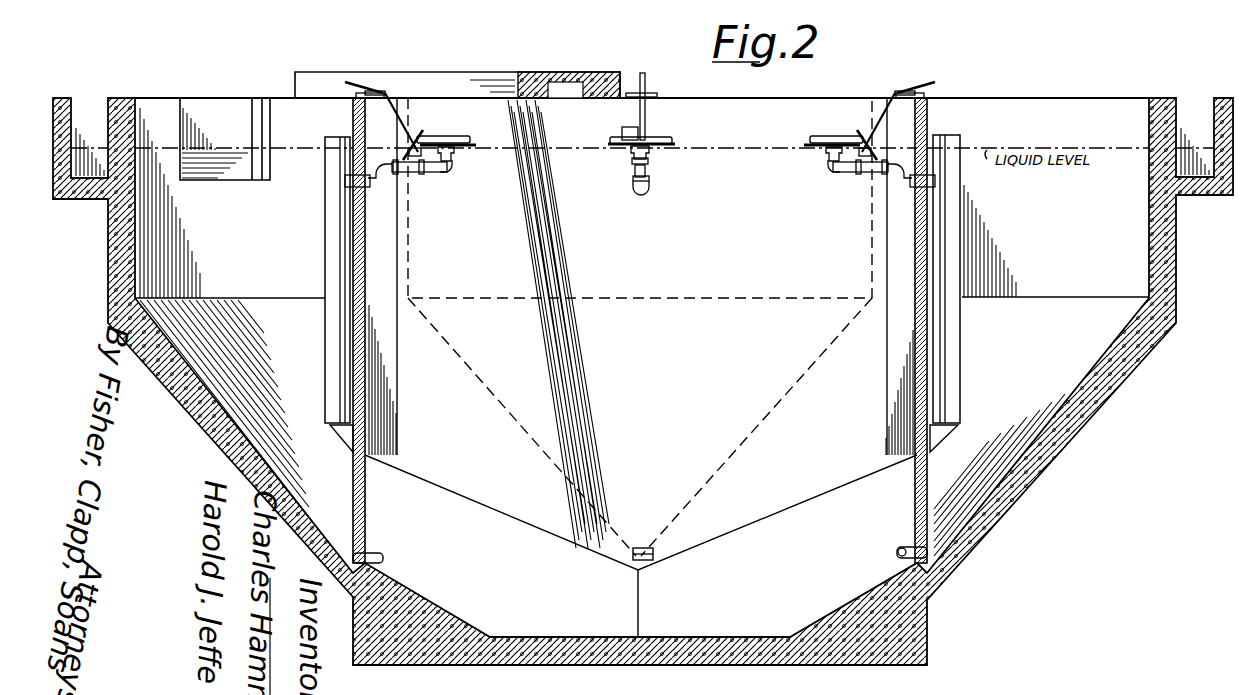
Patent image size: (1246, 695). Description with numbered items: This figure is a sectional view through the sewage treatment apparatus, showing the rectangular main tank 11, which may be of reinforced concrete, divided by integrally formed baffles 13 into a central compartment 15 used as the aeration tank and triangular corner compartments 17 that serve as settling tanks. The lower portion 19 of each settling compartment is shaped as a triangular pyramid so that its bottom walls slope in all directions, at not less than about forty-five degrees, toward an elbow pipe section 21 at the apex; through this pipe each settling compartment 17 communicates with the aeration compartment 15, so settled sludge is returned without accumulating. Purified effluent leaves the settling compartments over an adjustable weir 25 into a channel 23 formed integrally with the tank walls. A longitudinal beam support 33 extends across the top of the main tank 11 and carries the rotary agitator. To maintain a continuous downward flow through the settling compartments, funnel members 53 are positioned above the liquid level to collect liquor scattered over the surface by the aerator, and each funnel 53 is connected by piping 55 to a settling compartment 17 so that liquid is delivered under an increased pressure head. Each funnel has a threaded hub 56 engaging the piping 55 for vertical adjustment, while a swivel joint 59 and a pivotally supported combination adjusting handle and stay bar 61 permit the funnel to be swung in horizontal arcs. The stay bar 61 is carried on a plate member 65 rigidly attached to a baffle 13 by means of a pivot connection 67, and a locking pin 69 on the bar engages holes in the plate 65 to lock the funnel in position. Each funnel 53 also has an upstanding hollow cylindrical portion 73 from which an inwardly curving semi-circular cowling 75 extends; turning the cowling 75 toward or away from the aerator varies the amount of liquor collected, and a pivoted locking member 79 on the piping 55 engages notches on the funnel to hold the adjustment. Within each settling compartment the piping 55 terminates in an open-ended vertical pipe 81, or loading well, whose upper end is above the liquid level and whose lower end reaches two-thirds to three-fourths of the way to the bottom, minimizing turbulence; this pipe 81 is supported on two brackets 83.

The main tank 11 is at (1178, 249).
The baffle 13 is at (353, 273).
The central compartment 15 is at (675, 270).
The corner compartment 17 is at (230, 237).
The lower portion 19 is at (263, 410).
The elbow pipe section 21 is at (383, 557).
The channel 23 is at (91, 128).
The adjustable weir 25 is at (216, 152).
The longitudinal beam support 33 is at (486, 72).
The funnel member 53 is at (455, 150).
The piping 55 is at (428, 173).
The threaded hub 56 is at (454, 160).
The swivel joint 59 is at (390, 183).
The combination adjusting handle and stay bar 61 is at (402, 130).
The plate member 65 is at (362, 113).
The pivot connection 67 is at (386, 92).
The locking pin 69 is at (370, 94).
The upstanding hollow cylindrical portion 73 is at (468, 144).
The cowling 75 is at (454, 136).
The pivoted locking member 79 is at (412, 140).
The vertical pipe 81 is at (328, 223).
The bracket 83 is at (339, 442).